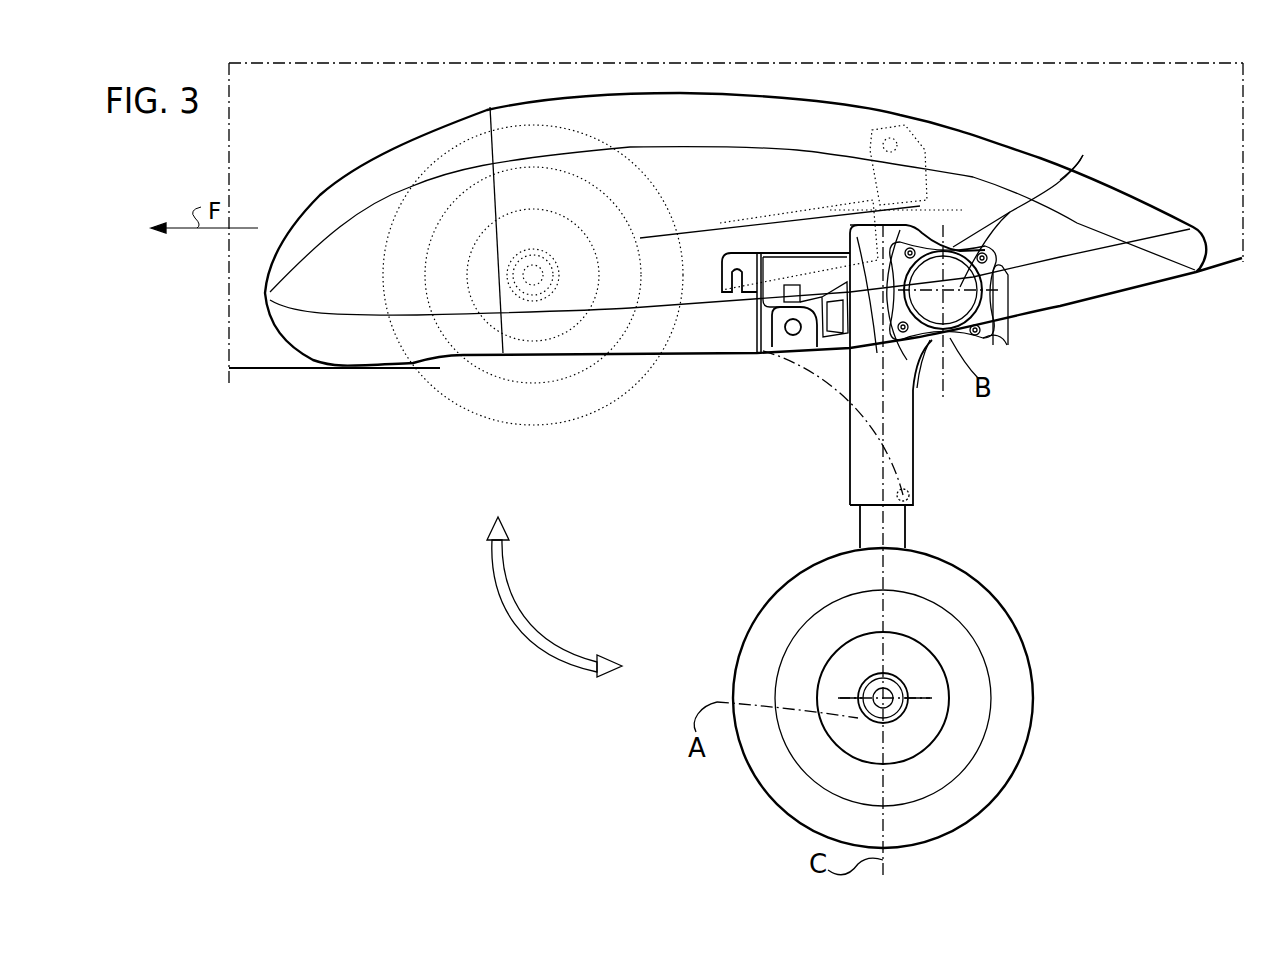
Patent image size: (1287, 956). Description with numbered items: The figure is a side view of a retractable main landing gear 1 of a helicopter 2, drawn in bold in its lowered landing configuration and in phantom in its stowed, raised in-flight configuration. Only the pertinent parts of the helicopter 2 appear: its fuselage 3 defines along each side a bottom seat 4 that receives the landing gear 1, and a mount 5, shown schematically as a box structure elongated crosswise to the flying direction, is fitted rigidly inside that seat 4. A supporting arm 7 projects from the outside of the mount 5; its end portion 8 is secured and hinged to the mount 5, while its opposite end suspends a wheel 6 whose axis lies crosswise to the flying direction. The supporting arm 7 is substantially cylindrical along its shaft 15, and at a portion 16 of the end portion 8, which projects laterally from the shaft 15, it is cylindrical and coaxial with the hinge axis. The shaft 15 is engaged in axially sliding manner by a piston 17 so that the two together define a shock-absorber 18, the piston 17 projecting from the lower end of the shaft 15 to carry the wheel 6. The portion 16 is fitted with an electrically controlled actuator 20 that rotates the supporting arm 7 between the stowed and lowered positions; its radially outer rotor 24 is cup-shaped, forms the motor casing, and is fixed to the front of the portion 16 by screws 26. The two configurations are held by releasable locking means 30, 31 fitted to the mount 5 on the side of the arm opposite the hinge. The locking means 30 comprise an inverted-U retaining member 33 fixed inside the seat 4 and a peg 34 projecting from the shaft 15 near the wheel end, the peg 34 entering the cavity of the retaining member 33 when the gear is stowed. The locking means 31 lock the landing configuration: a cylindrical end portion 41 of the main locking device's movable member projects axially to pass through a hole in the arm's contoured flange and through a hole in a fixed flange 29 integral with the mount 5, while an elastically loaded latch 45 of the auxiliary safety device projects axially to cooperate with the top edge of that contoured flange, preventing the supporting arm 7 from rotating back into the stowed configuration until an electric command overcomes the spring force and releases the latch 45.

The retractable main landing gear 1 is at (665, 480).
The helicopter 2 is at (1231, 268).
The fuselage 3 is at (242, 353).
The bottom seat 4 is at (311, 289).
The mount 5 is at (756, 315).
The wheel 6 is at (1007, 645).
The supporting arm 7 is at (923, 365).
The end portion 8 is at (868, 218).
The shaft 15 is at (903, 416).
The portion 16 is at (917, 237).
The piston 17 is at (898, 531).
The shock-absorber 18 is at (852, 532).
The electrically controlled actuator 20 is at (952, 251).
The rotor 24 is at (1083, 176).
The screws 26 is at (972, 333).
The flange 29 is at (772, 343).
The releasable locking means 30 is at (718, 256).
The releasable locking means 31 is at (757, 253).
The retaining member 33 is at (722, 292).
The peg 34 is at (910, 493).
The cylindrical end portion 41 is at (797, 333).
The latch 45 is at (788, 283).